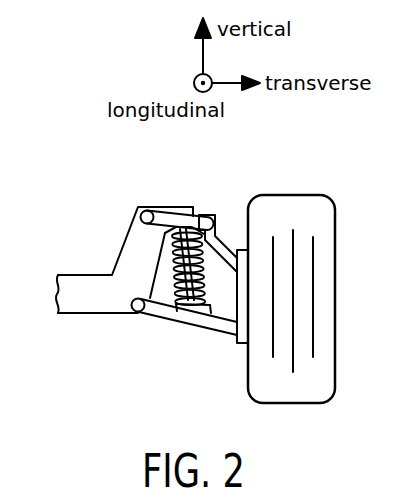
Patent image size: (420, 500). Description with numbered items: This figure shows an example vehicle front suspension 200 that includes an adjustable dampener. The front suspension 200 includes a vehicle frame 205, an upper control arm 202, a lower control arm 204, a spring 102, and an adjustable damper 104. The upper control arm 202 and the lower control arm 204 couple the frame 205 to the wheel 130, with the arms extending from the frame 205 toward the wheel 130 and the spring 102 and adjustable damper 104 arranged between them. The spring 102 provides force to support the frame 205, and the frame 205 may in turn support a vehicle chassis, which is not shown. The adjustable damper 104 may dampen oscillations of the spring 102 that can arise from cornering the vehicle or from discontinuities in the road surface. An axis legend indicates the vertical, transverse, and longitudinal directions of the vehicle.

The front suspension 200 is at (106, 185).
The upper control arm 202 is at (183, 213).
The vehicle frame 205 is at (78, 315).
The spring 102 is at (177, 283).
The adjustable damper 104 is at (197, 300).
The lower control arm 204 is at (187, 325).
The wheel 130 is at (335, 288).